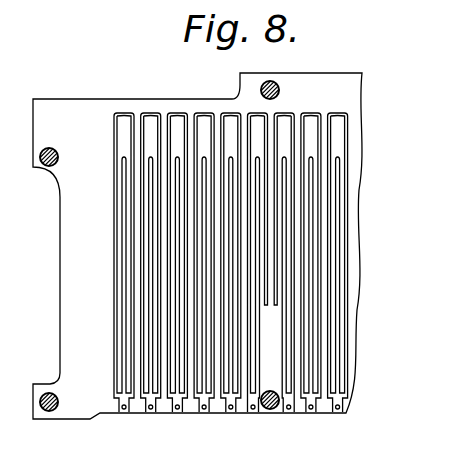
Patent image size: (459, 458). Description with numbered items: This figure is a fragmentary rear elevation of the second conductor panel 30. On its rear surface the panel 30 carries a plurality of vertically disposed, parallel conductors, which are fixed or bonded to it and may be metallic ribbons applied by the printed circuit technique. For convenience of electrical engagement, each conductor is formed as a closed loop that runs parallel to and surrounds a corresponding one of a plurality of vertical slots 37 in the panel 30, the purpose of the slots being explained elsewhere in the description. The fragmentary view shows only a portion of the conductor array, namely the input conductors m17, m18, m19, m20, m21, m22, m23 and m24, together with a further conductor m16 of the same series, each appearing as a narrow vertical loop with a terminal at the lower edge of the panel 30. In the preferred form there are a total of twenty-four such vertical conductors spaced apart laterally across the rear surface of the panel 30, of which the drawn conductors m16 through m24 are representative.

The panel 30 is at (347, 90).
The vertical slots 37 is at (180, 205).
The terminal m16 is at (338, 412).
The input conductor m17 is at (311, 412).
The input conductor m18 is at (289, 412).
The input conductor m19 is at (253, 412).
The input conductor m20 is at (231, 412).
The input conductor m21 is at (204, 412).
The input conductor m22 is at (177, 412).
The input conductor m23 is at (151, 412).
The input conductor m24 is at (125, 412).